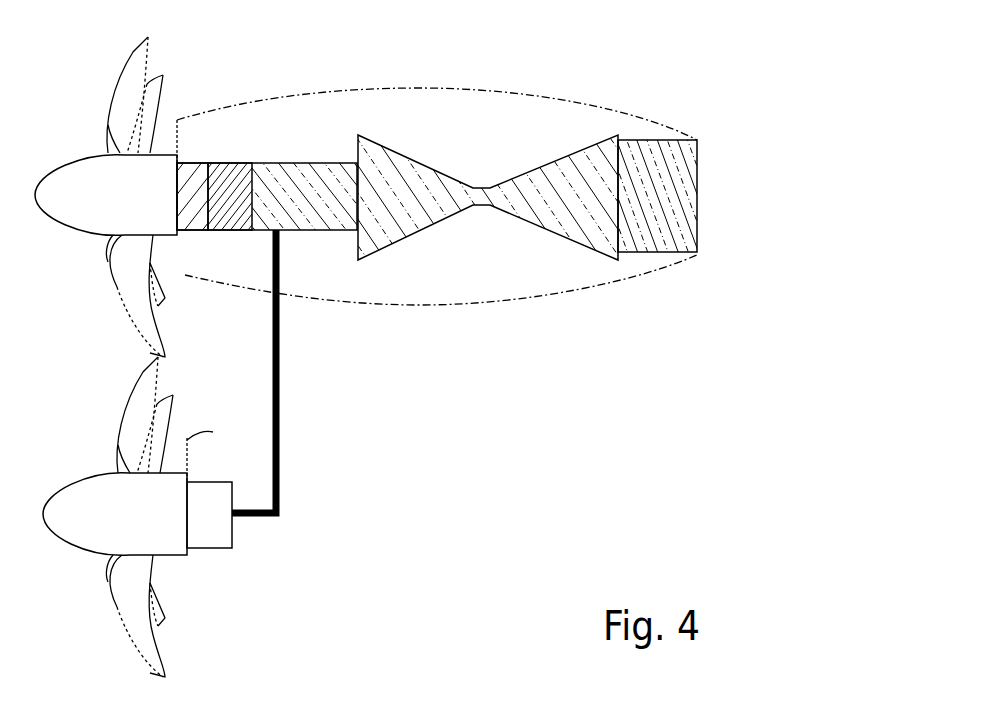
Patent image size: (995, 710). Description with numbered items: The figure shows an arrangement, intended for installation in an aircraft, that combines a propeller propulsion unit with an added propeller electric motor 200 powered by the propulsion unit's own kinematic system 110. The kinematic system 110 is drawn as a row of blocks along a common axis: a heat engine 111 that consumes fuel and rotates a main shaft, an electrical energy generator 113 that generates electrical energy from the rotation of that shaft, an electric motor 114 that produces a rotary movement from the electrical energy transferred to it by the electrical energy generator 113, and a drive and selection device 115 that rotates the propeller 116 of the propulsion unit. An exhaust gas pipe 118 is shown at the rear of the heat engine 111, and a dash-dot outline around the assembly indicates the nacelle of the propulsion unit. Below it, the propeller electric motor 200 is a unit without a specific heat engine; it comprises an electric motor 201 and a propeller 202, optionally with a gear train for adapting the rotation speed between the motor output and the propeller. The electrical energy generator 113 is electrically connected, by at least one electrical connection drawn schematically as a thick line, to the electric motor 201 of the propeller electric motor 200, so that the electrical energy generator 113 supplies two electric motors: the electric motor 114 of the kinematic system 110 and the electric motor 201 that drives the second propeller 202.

The kinematic system 110 is at (760, 147).
The heat engine 111 is at (545, 208).
The electrical energy generator 113 is at (285, 208).
The electric motor 114 is at (233, 177).
The drive and selection device 115 is at (198, 182).
The propeller 116 is at (80, 216).
The exhaust gas pipe 118 is at (635, 208).
The propeller electric motor 200 is at (245, 584).
The electric motor 201 is at (207, 495).
The propeller 202 is at (98, 526).